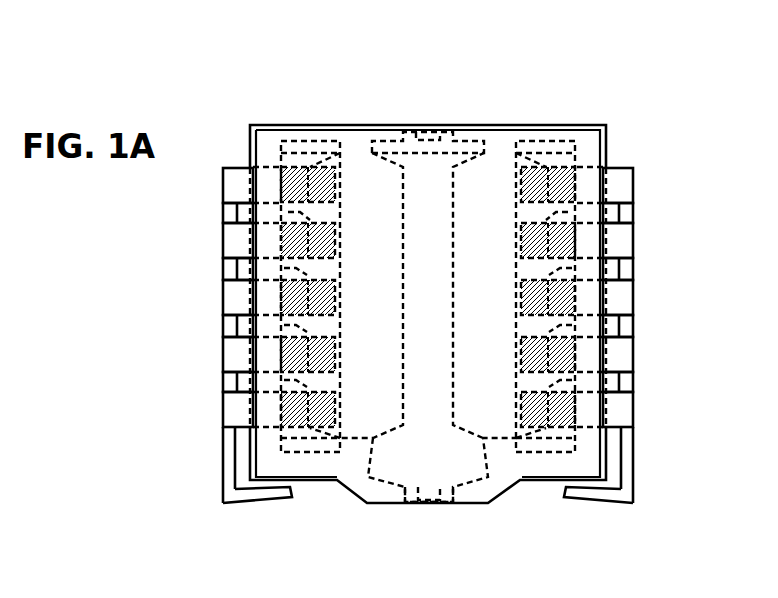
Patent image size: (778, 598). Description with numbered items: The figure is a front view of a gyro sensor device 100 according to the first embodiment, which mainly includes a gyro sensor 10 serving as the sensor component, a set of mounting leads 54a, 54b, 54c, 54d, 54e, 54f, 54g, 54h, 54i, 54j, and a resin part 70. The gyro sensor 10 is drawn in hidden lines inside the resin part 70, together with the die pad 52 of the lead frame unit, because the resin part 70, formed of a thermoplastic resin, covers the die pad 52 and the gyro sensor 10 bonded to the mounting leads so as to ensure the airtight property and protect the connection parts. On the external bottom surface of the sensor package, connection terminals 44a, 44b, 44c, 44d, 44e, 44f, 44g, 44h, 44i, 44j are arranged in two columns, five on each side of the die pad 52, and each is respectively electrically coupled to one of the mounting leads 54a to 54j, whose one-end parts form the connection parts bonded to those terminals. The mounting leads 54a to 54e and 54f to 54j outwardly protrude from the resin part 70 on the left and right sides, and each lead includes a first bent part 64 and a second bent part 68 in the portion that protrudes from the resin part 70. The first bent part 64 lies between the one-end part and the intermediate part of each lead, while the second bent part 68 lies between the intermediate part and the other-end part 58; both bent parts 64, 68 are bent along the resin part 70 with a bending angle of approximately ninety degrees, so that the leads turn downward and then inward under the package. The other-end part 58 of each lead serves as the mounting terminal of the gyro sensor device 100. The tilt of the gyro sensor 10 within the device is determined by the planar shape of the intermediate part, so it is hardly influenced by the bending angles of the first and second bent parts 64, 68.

The gyro sensor device 100 is at (473, 105).
The gyro sensor 10 is at (500, 150).
The resin part 70 is at (582, 142).
The connection terminal 44a is at (328, 188).
The connection terminal 44b is at (330, 240).
The connection terminal 44c is at (330, 297).
The connection terminal 44d is at (330, 353).
The connection terminal 44e is at (330, 408).
The connection terminal 44f is at (537, 185).
The connection terminal 44g is at (527, 245).
The connection terminal 44h is at (527, 300).
The connection terminal 44i is at (527, 356).
The connection terminal 44j is at (527, 412).
The mounting lead 54a is at (238, 167).
The mounting lead 54b is at (223, 247).
The mounting lead 54c is at (223, 305).
The mounting lead 54d is at (223, 360).
The mounting lead 54e is at (223, 415).
The mounting lead 54f is at (633, 187).
The mounting lead 54g is at (633, 247).
The mounting lead 54h is at (633, 305).
The mounting lead 54i is at (633, 360).
The mounting lead 54j is at (633, 415).
The first bent part 64 is at (235, 190).
The second bent part 68 is at (232, 497).
The other-end part 58 is at (277, 492).
The die pad 52 is at (477, 482).